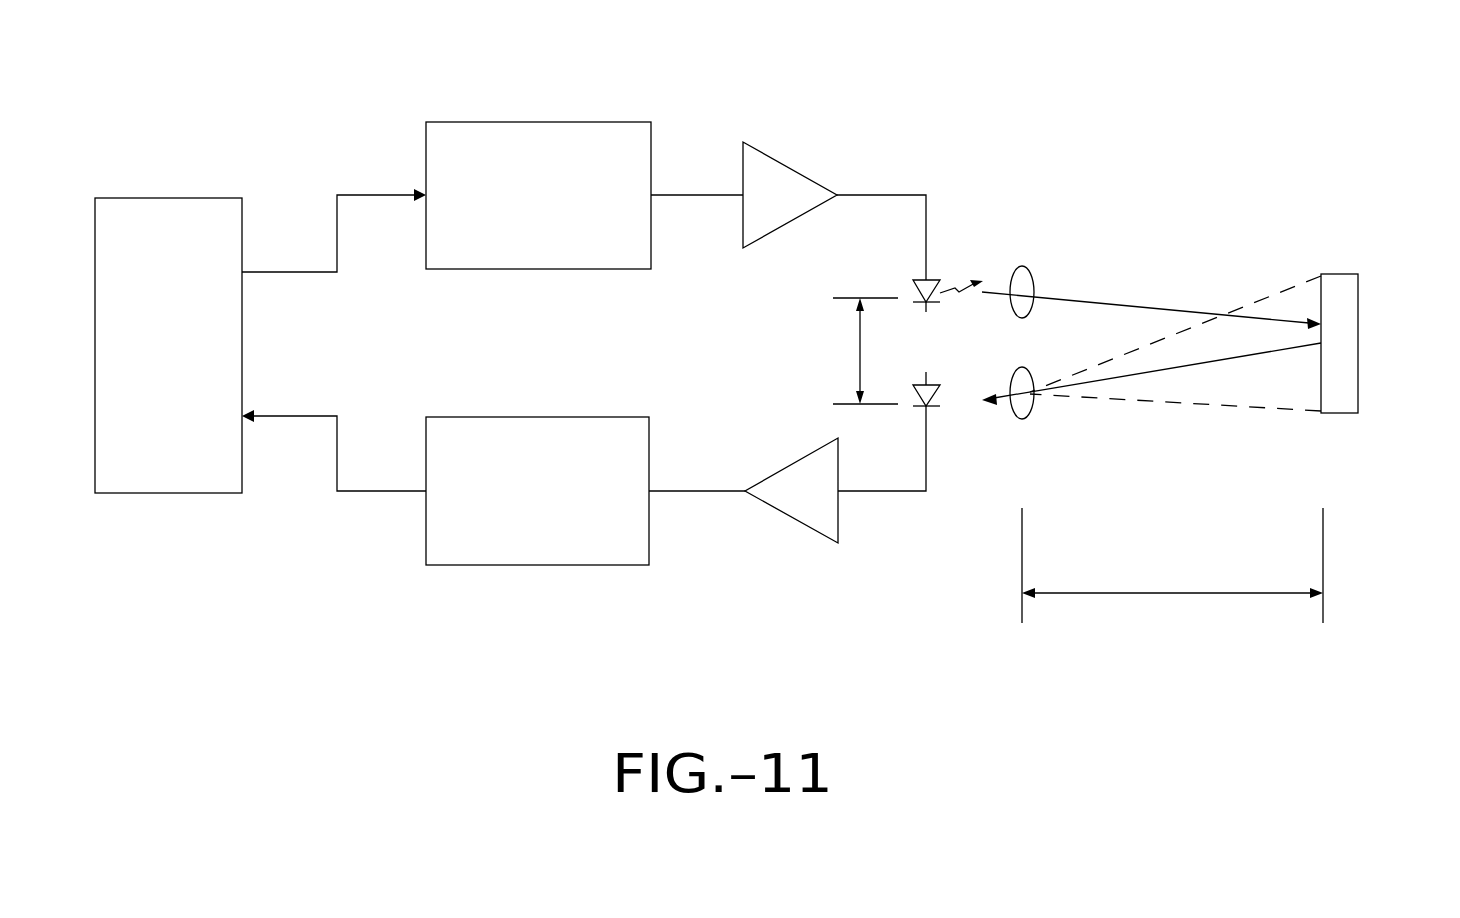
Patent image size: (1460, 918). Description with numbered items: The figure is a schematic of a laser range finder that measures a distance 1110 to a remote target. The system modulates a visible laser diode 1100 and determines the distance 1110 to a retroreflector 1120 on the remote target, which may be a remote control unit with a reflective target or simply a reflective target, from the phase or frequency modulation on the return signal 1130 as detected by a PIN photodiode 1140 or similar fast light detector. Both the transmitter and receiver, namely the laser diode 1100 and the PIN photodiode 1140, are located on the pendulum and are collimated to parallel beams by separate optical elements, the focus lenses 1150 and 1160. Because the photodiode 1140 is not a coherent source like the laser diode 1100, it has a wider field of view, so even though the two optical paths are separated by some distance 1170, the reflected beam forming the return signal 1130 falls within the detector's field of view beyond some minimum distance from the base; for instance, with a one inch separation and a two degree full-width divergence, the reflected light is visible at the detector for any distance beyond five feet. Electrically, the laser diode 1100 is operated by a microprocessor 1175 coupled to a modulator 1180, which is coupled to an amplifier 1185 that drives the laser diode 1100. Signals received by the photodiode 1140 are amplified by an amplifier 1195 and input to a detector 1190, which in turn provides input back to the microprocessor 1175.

The microprocessor 1175 is at (157, 222).
The modulator 1180 is at (529, 133).
The amplifier 1185 is at (776, 172).
The visible laser diode 1100 is at (933, 275).
The focus lens 1150 is at (1033, 288).
The retroreflector 1120 is at (1342, 277).
The separation distance 1170 is at (857, 350).
The focus lens 1160 is at (1028, 412).
The return signal 1130 is at (1180, 333).
The PIN photodiode 1140 is at (928, 392).
The amplifier 1195 is at (808, 518).
The detector 1190 is at (522, 557).
The distance 1110 is at (1165, 593).